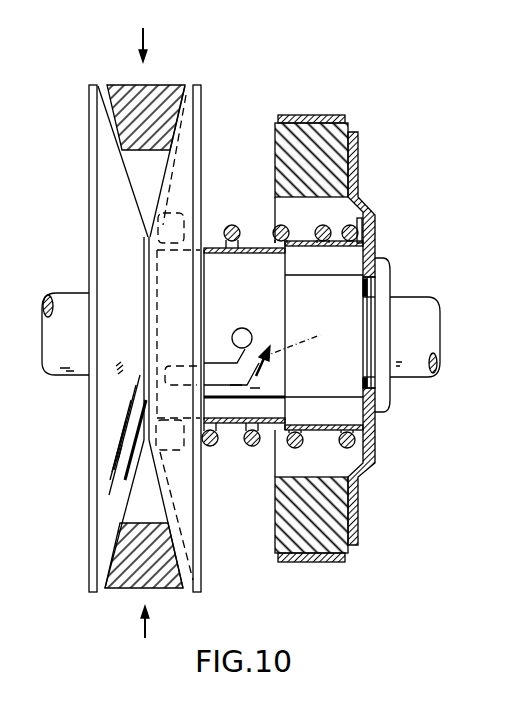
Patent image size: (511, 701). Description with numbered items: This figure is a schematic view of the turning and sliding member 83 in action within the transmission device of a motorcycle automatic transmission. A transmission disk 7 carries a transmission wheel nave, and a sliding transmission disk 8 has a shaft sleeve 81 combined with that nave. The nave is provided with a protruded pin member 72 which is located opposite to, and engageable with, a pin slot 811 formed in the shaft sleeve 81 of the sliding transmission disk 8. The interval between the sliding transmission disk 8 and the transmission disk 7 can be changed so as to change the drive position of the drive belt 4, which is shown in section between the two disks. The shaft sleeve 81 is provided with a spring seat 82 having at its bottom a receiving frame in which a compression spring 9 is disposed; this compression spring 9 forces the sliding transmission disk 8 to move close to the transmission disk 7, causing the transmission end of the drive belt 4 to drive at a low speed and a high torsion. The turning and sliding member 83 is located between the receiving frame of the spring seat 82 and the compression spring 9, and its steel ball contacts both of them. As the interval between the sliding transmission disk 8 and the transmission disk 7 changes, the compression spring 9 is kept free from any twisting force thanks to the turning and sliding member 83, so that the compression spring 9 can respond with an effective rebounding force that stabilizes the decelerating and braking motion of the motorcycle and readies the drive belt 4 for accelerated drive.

The drive belt 4 is at (173, 90).
The transmission disk 7 is at (92, 110).
The sliding transmission disk 8 is at (198, 107).
The compression spring 9 is at (233, 224).
The protruded pin member 72 is at (252, 328).
The shaft sleeve 81 is at (270, 275).
The spring seat 82 is at (230, 440).
The turning and sliding member 83 is at (163, 223).
The pin slot 811 is at (333, 332).